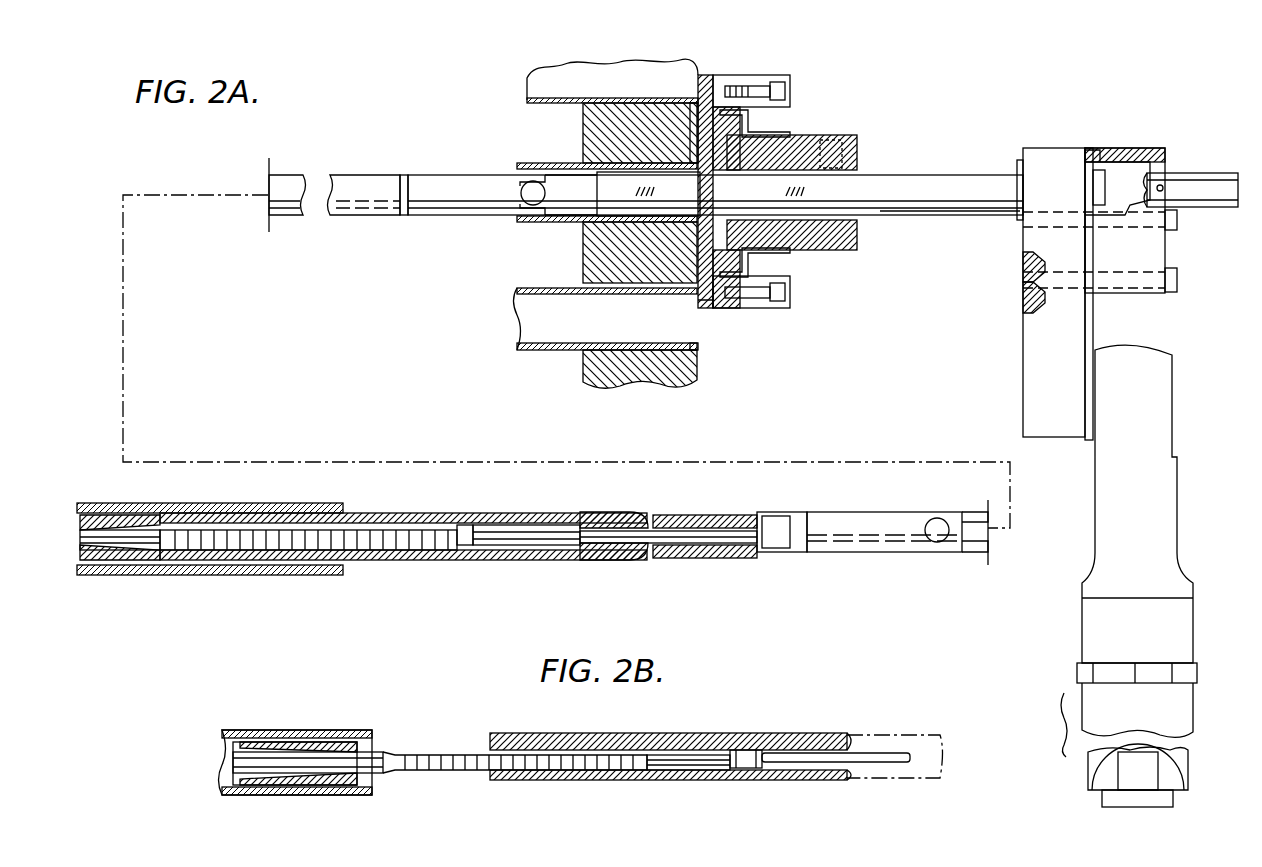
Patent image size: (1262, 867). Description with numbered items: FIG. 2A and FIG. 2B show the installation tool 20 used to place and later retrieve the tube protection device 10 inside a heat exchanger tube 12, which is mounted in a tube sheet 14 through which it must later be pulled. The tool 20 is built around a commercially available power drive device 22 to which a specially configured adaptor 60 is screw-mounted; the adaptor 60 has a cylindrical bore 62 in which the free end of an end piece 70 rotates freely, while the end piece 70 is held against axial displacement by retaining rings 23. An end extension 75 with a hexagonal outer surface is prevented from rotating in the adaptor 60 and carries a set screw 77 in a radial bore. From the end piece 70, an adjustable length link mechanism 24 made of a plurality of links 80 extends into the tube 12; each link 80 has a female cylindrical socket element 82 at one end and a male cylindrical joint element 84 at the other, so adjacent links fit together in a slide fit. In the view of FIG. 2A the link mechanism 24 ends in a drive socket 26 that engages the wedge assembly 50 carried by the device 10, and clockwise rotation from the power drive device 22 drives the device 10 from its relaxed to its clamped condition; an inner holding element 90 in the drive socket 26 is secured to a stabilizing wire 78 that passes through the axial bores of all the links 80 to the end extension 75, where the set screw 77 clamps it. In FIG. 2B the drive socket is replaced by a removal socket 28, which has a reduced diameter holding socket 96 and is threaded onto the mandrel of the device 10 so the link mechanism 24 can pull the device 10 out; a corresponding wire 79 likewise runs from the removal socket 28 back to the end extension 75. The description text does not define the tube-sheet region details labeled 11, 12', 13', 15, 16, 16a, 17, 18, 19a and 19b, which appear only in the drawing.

In FIG. 2A, the tube protection device 10 is at (70, 512).
In FIG. 2B, the tube protection device 10 is at (222, 741).
In FIG. 2A, the hub 11 is at (700, 172).
In FIG. 2A, the heat exchanger tube 12 is at (387, 369).
In FIG. 2B, the heat exchanger tube 12 is at (297, 741).
In FIG. 2A, the upper tube wall 12' is at (594, 81).
In FIG. 2A, the upper sleeve 13' is at (669, 114).
In FIG. 2A, the tube sheet 14 is at (583, 125).
In FIG. 2A, the flange plate 15 is at (748, 66).
In FIG. 2A, the mounting block 16 is at (857, 150).
In FIG. 2A, the bore 16a is at (842, 140).
In FIG. 2A, the step 17 is at (700, 310).
In FIG. 2A, the bolt 18 is at (785, 84).
In FIG. 2A, the lower bracket 19a is at (790, 245).
In FIG. 2A, the upper bracket 19b is at (792, 118).
In FIG. 2A, the installation tool 20 is at (970, 129).
In FIG. 2A, the power drive device 22 is at (1073, 463).
In FIG. 2A, the retaining rings 23 is at (1019, 160).
In FIG. 2A, the adjustable length link mechanism 24 is at (432, 160).
In FIG. 2B, the adjustable length link mechanism 24 is at (880, 705).
In FIG. 2A, the drive socket 26 is at (583, 511).
In FIG. 2B, the removal socket 28 is at (785, 780).
In FIG. 2A, the wedge assembly 50 is at (180, 515).
In FIG. 2A, the adaptor 60 is at (1118, 295).
In FIG. 2A, the cylindrical bore 62 is at (1118, 150).
In FIG. 2A, the end piece 70 is at (918, 216).
In FIG. 2A, the end extension 75 is at (1222, 173).
In FIG. 2A, the set screw 77 is at (1165, 190).
In FIG. 2A, the stabilizing wire 78 is at (697, 528).
In FIG. 2B, the stabilizing wire 79 is at (855, 753).
In FIG. 2A, the link 80 is at (352, 176).
In FIG. 2B, the link 80 is at (890, 735).
In FIG. 2A, the female cylindrical socket element 82 is at (397, 216).
In FIG. 2A, the male cylindrical joint element 84 is at (945, 518).
In FIG. 2A, the inner holding element 90 is at (540, 520).
In FIG. 2B, the holding socket 96 is at (745, 750).